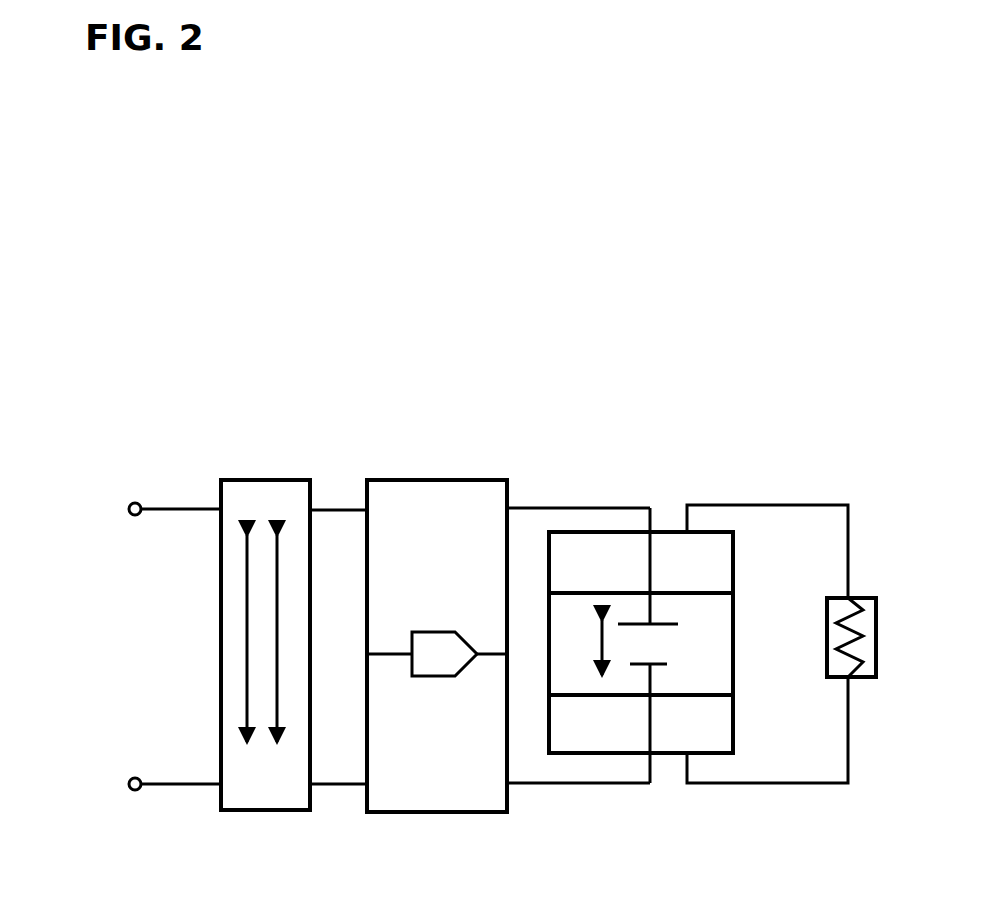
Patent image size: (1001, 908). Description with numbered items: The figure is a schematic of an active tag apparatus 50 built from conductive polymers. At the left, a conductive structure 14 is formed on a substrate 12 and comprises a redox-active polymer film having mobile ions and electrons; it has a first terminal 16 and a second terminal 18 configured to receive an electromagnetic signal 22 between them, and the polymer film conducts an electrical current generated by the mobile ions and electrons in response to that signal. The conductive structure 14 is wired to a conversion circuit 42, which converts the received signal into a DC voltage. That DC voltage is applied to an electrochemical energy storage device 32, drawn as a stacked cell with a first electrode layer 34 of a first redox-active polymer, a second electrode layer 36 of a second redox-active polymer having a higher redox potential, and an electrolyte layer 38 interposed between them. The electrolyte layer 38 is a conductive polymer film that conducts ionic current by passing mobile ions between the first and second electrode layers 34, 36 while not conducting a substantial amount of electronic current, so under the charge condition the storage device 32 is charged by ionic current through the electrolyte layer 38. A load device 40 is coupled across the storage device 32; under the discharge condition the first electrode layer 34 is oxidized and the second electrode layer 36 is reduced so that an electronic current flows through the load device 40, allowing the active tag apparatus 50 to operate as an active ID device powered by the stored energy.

The substrate 12 is at (272, 818).
The conductive structure 14 is at (261, 472).
The first terminal 16 is at (124, 497).
The second terminal 18 is at (124, 793).
The electromagnetic signal 22 is at (13, 585).
The electrochemical energy storage device 32 is at (672, 485).
The first electrode layer 34 is at (742, 565).
The second electrode layer 36 is at (742, 728).
The electrolyte layer 38 is at (742, 636).
The load device 40 is at (867, 593).
The conversion circuit 42 is at (421, 474).
The active tag apparatus 50 is at (680, 286).